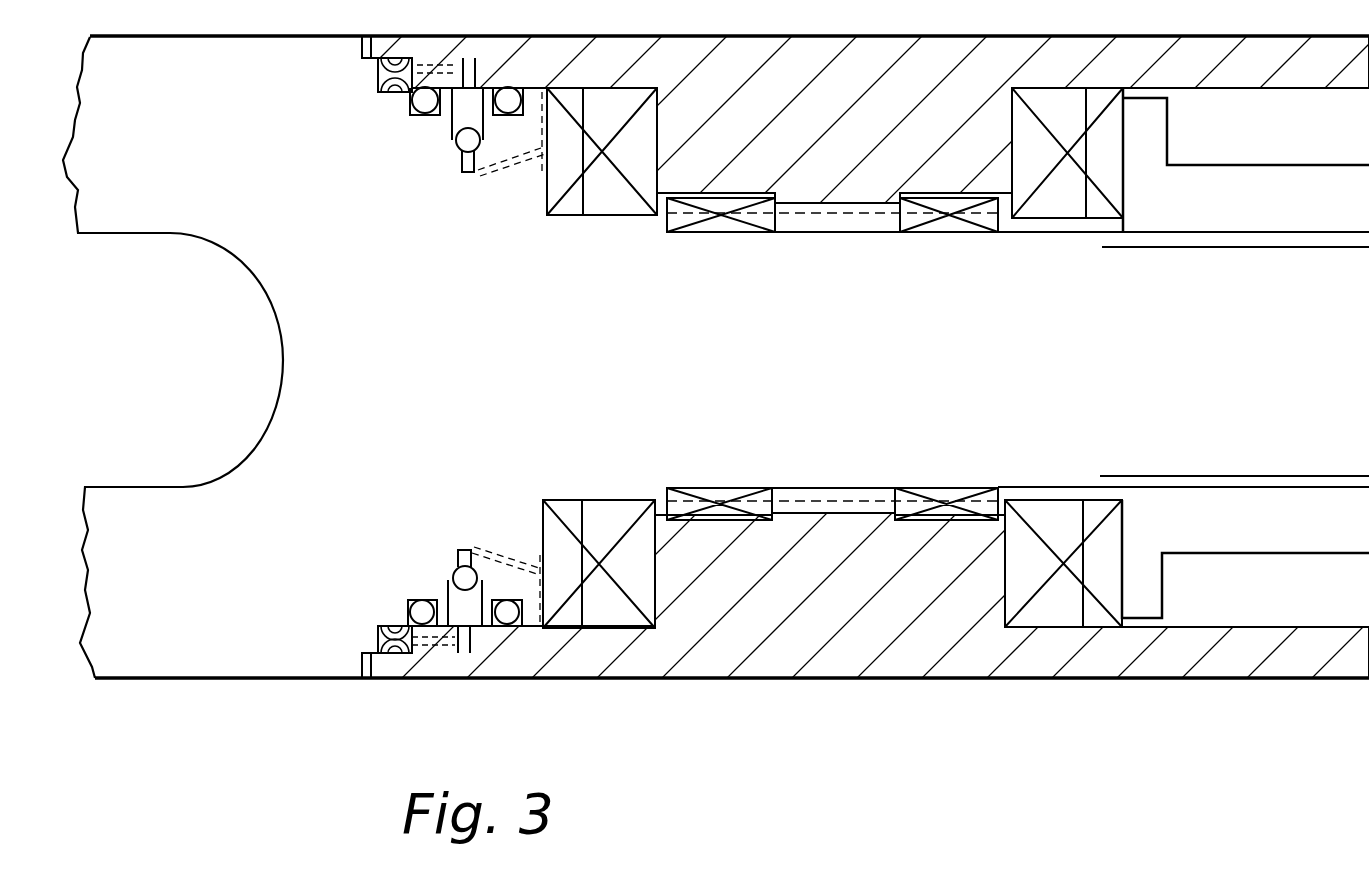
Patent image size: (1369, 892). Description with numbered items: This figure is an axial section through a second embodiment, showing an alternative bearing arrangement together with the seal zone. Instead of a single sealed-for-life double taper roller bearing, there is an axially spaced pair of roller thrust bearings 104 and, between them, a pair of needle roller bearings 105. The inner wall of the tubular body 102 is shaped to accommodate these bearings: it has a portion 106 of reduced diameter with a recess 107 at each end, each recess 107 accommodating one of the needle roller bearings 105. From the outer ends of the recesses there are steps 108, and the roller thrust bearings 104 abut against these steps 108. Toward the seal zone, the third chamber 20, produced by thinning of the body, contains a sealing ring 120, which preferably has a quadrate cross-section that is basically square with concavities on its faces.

The tubular body 102 is at (842, 648).
The roller thrust bearings 104 is at (547, 201).
The needle roller bearings 105 is at (728, 233).
The portion of reduced diameter 106 is at (843, 520).
The recess 107 is at (734, 526).
The steps 108 is at (652, 547).
The sealing ring 120 is at (382, 620).
The third chamber 20 is at (376, 630).